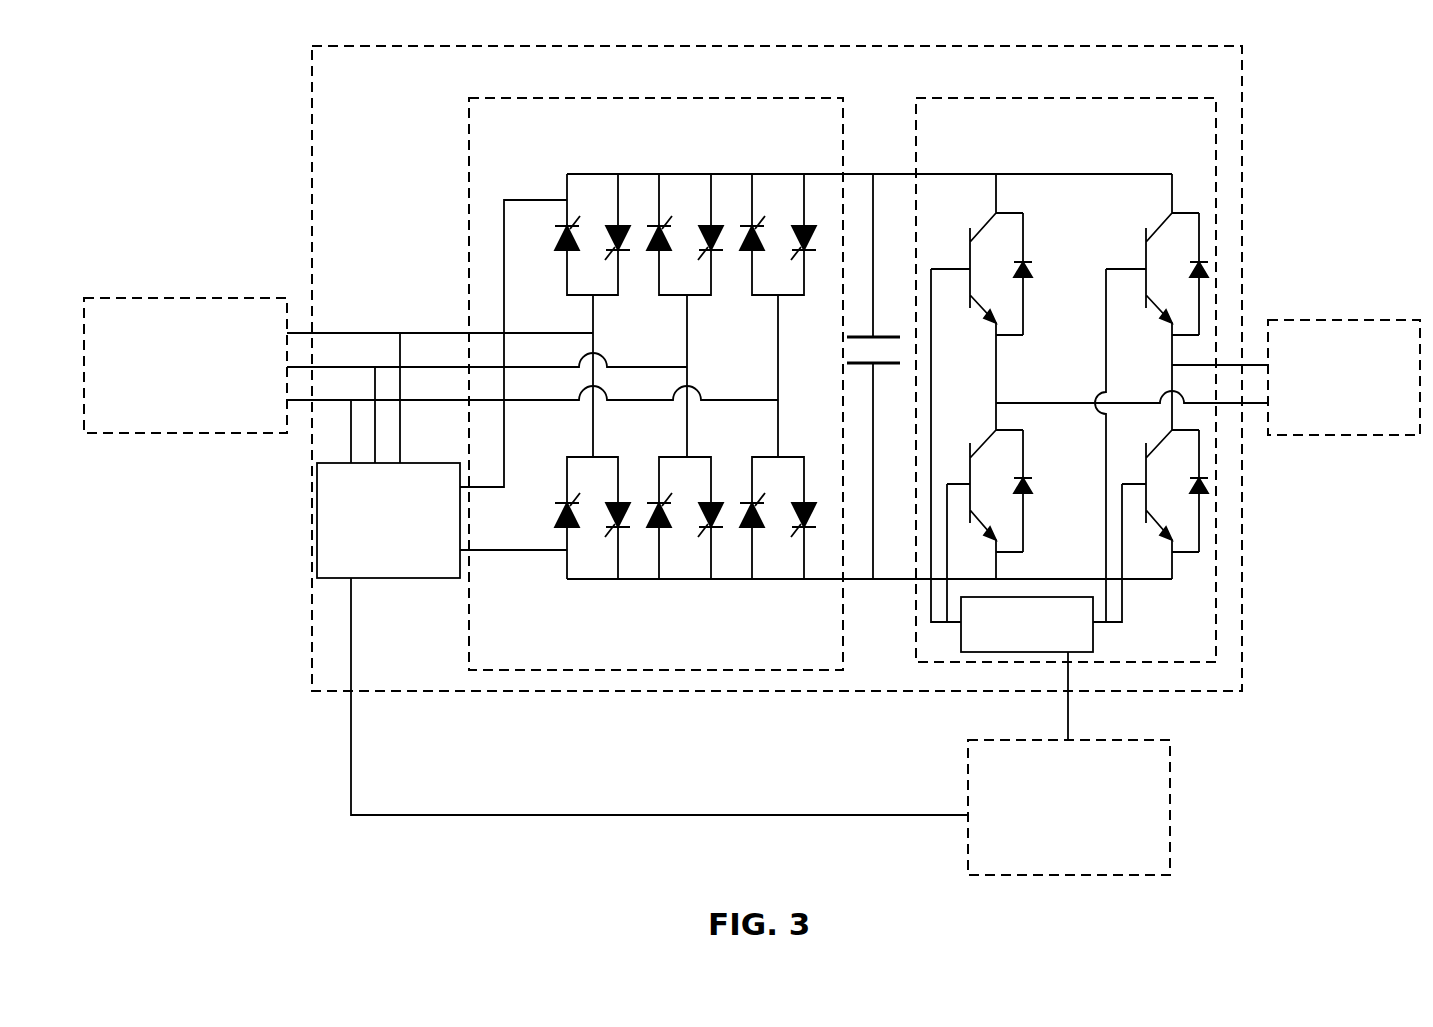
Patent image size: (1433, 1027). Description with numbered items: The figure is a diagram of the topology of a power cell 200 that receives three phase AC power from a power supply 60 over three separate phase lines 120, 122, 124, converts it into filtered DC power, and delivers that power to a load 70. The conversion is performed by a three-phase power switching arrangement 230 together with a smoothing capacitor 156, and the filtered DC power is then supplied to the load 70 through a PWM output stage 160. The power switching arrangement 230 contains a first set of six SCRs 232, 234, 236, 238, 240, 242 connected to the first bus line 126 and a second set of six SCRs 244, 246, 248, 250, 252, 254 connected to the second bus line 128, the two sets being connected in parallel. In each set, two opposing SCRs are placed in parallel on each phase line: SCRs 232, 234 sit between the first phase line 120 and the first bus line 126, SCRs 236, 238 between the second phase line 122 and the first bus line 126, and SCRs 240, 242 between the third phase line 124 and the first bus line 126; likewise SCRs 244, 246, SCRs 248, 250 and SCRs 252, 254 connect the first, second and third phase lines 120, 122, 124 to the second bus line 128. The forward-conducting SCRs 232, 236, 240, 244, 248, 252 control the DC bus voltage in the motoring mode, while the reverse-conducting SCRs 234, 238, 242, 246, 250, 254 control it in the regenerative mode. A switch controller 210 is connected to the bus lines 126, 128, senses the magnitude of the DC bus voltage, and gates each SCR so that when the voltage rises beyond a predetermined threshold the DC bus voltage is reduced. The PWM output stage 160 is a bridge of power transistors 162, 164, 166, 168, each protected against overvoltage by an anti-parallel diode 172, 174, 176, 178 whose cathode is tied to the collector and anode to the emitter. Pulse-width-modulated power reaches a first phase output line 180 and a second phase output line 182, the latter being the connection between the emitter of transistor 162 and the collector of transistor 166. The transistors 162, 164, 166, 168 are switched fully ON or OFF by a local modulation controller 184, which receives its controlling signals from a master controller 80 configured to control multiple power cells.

The power supply 60 is at (133, 298).
The load 70 is at (1355, 320).
The master controller 80 is at (1170, 815).
The first phase line 120 is at (325, 333).
The second phase line 122 is at (336, 367).
The third phase line 124 is at (343, 400).
The first bus line 126 is at (858, 174).
The second bus line 128 is at (863, 580).
The smoothing capacitor 156 is at (885, 363).
The PWM output stage 160 is at (1063, 98).
The transistor 162 is at (972, 294).
The transistor 164 is at (1148, 294).
The transistor 166 is at (968, 458).
The transistor 168 is at (1146, 468).
The anti-parallel diode 172 is at (1030, 272).
The anti-parallel diode 174 is at (1205, 275).
The anti-parallel diode 176 is at (1030, 490).
The anti-parallel diode 178 is at (1207, 488).
The first phase output line 180 is at (1248, 365).
The second phase output line 182 is at (1258, 405).
The local modulation controller 184 is at (1093, 645).
The power cell 200 is at (1242, 67).
The switch controller 210 is at (410, 578).
The power switching arrangement 230 is at (650, 98).
The SCR 232 is at (565, 252).
The SCR 234 is at (620, 222).
The SCR 236 is at (657, 252).
The SCR 238 is at (712, 222).
The SCR 240 is at (750, 252).
The SCR 242 is at (807, 222).
The SCR 244 is at (572, 530).
The SCR 246 is at (621, 502).
The SCR 248 is at (663, 530).
The SCR 250 is at (714, 502).
The SCR 252 is at (755, 530).
The SCR 254 is at (807, 502).